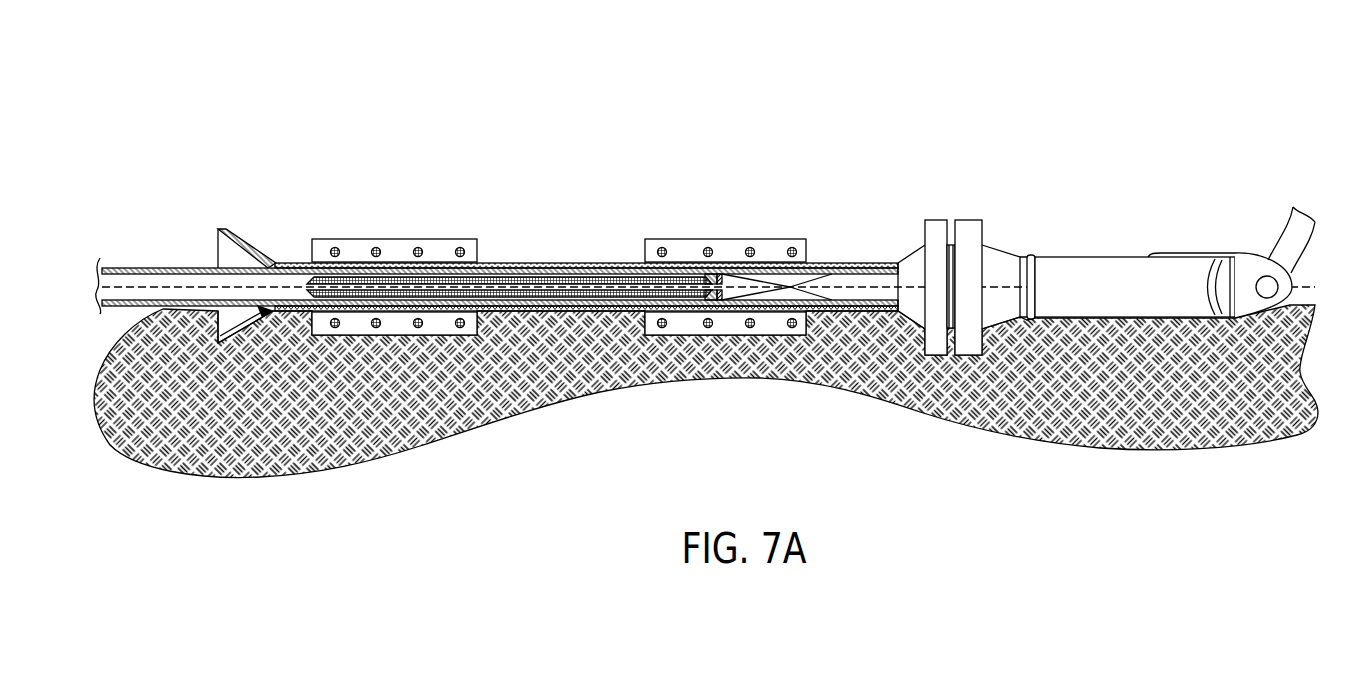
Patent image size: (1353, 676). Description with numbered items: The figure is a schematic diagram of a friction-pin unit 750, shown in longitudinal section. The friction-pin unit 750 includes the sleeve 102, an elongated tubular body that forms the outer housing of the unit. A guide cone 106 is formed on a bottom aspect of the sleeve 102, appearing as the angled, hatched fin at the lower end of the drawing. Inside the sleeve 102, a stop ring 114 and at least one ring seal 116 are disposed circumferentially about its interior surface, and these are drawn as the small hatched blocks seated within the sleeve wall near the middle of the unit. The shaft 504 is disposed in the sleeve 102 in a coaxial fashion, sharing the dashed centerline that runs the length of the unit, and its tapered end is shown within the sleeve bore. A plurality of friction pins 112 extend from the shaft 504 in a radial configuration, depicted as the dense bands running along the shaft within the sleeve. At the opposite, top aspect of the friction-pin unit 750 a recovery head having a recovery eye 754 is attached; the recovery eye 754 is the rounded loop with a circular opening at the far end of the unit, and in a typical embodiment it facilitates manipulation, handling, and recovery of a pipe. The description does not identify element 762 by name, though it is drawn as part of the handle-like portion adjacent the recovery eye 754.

The friction-pin unit 750 is at (1210, 87).
The recovery eye 754 is at (1265, 276).
The handle 762 is at (1112, 257).
The sleeve 102 is at (552, 263).
The guide cone 106 is at (273, 262).
The friction pins 112 is at (598, 278).
The ring seal 116 is at (700, 267).
The stop ring 114 is at (723, 273).
The shaft 504 is at (770, 285).